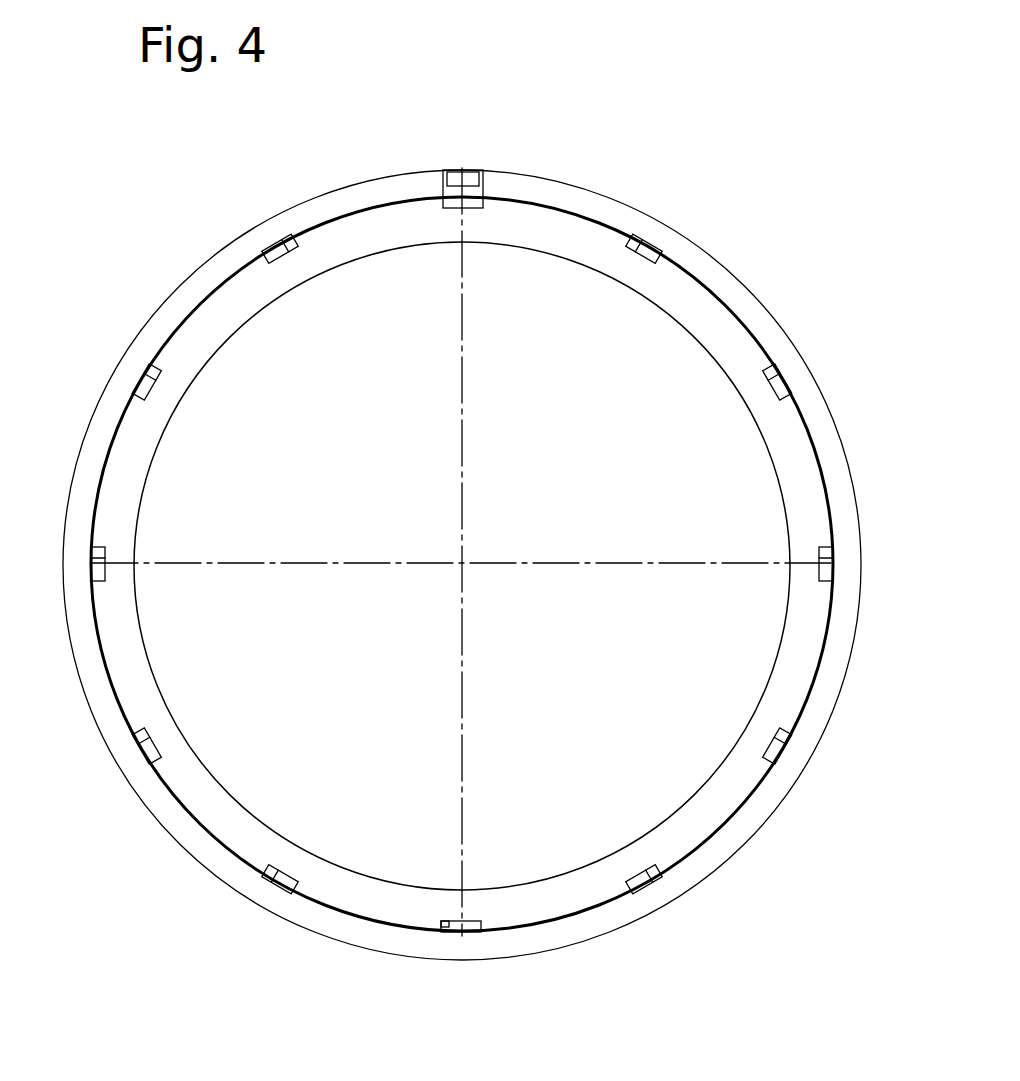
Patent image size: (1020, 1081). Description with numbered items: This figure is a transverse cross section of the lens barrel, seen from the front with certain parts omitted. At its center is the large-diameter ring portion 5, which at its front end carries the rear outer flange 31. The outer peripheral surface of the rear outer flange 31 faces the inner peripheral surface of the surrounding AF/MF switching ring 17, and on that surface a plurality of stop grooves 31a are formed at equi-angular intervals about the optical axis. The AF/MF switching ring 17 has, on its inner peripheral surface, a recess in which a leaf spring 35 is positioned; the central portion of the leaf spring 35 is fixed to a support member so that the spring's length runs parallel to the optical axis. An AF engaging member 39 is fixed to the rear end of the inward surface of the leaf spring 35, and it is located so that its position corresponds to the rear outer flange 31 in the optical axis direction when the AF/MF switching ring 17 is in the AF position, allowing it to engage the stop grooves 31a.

The large-diameter ring portion 5 is at (627, 270).
The AF/MF switching ring 17 is at (652, 226).
The rear outer flange 31 is at (706, 322).
The stop grooves 31a is at (483, 209).
The leaf spring 35 is at (448, 172).
The AF engaging member 39 is at (483, 174).